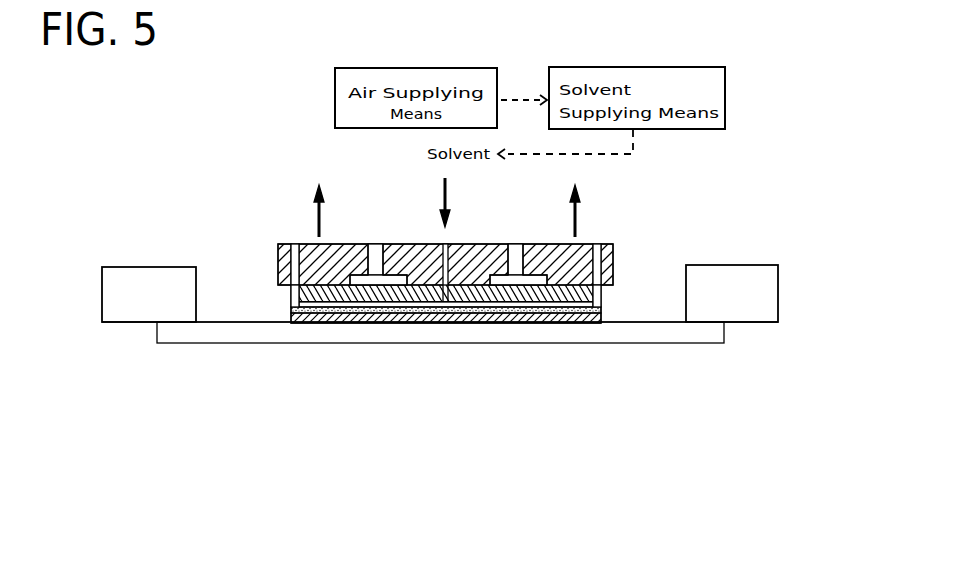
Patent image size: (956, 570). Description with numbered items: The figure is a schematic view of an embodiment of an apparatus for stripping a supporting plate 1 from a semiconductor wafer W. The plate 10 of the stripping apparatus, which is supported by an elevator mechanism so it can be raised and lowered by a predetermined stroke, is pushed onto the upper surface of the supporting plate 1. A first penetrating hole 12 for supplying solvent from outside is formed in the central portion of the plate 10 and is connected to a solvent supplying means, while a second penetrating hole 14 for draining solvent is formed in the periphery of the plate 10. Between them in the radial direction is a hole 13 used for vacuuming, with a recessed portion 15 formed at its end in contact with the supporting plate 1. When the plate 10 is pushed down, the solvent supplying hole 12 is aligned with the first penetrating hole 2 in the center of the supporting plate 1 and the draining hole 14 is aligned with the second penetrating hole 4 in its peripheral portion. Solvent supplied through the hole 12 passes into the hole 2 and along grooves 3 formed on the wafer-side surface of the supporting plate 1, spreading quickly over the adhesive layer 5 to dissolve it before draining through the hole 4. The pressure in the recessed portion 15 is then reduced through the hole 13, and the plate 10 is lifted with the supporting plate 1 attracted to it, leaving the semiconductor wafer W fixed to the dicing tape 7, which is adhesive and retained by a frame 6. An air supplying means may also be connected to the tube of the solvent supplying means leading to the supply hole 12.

The supporting plate 1 is at (284, 294).
The first penetrating hole 2 is at (438, 323).
The grooves 3 is at (563, 323).
The second penetrating hole 4 is at (291, 285).
The adhesive layer 5 is at (473, 323).
The frame 6 is at (112, 278).
The dicing tape 7 is at (232, 335).
The plate 10 is at (275, 249).
The first penetrating hole 12 is at (450, 245).
The hole 13 is at (377, 247).
The second penetrating hole 14 is at (295, 247).
The recessed portion 15 is at (526, 245).
The semiconductor wafer W is at (355, 318).